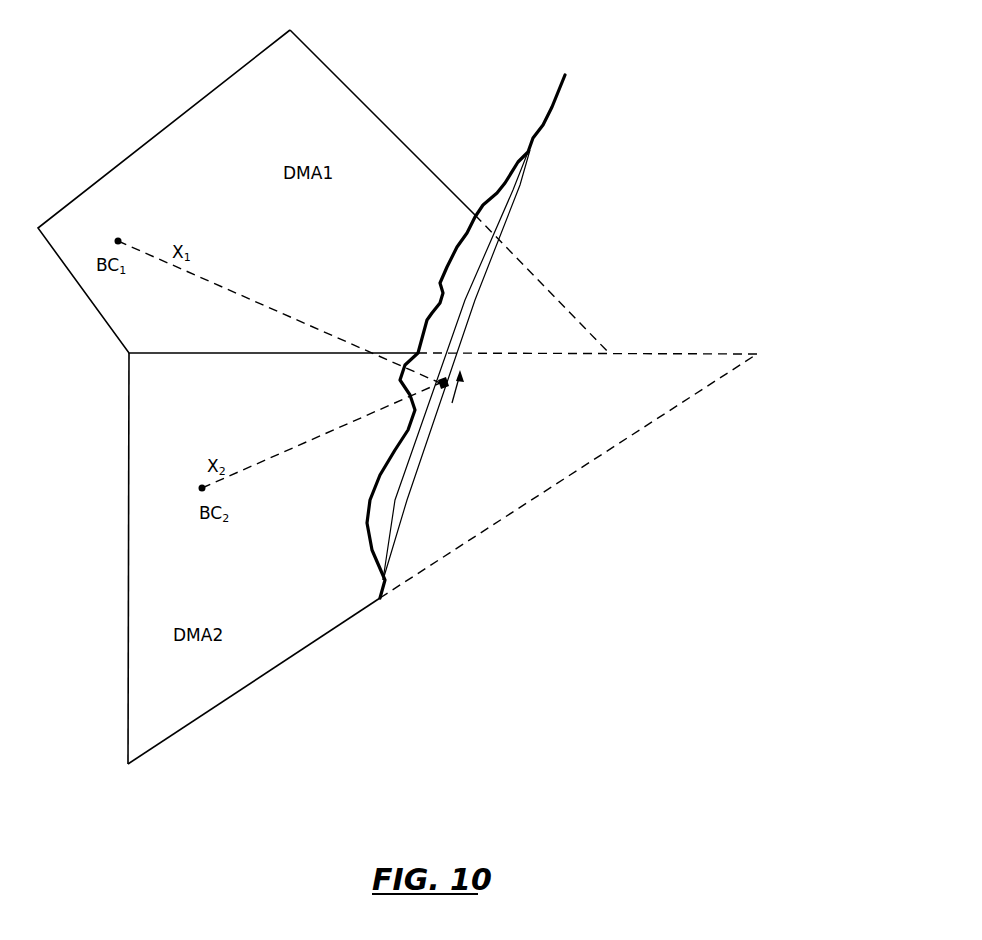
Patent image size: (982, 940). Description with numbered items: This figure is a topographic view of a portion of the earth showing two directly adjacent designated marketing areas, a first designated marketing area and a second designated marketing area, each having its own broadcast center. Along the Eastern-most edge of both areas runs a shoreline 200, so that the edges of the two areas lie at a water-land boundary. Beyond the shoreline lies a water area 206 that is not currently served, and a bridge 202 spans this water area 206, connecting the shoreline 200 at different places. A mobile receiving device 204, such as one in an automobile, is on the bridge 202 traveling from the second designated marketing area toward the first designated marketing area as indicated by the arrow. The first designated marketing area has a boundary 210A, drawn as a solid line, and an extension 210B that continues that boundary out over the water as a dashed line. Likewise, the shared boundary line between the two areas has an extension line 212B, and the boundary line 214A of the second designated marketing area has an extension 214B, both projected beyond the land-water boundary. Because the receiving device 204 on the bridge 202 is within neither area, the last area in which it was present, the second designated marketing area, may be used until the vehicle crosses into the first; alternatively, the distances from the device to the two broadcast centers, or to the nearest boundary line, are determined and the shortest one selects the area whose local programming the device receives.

The shoreline 200 is at (543, 125).
The bridge 202 is at (433, 435).
The mobile receiving device 204 is at (443, 393).
The water area 206 is at (502, 494).
The boundary 210A is at (347, 82).
The extension 210B is at (547, 290).
The extension line 212B is at (480, 354).
The boundary line 214A is at (247, 687).
The extension 214B is at (427, 568).